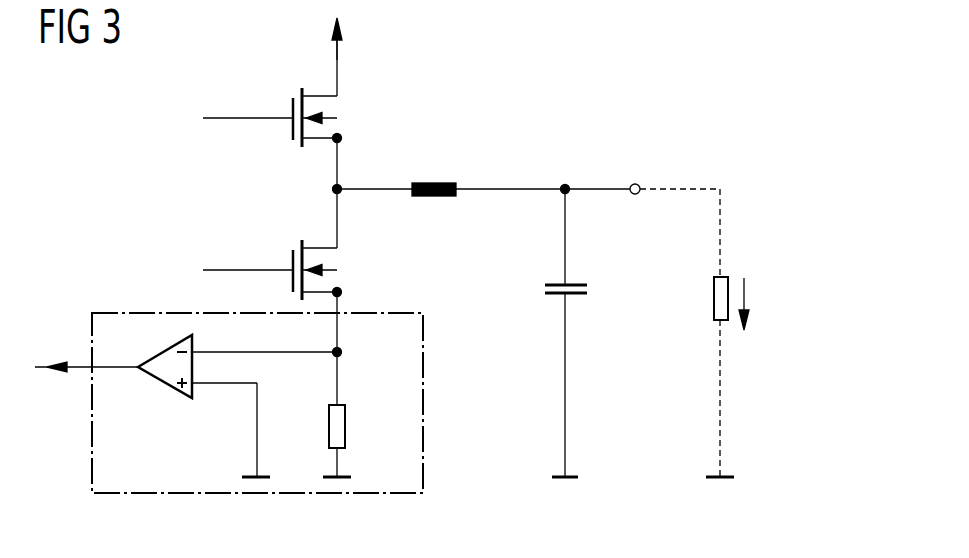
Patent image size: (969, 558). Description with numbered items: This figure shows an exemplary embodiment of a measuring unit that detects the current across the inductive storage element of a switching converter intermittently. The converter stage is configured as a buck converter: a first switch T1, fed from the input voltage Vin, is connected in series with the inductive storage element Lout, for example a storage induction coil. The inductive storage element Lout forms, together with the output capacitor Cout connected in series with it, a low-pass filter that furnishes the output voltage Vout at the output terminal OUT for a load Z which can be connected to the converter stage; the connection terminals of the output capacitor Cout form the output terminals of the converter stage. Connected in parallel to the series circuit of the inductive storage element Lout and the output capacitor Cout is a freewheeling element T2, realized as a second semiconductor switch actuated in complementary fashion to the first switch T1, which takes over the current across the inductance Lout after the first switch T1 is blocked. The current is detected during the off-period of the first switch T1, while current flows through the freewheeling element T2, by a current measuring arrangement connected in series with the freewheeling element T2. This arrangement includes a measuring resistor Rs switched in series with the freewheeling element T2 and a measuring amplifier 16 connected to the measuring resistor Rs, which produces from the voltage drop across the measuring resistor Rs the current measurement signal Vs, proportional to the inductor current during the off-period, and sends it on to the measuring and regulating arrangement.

The first switch T1 is at (292, 107).
The freewheeling element T2 is at (292, 258).
The input voltage Vin is at (354, 38).
The inductive storage element Lout is at (425, 183).
The output capacitor Cout is at (542, 290).
The output terminal OUT is at (637, 171).
The load impedance Z is at (713, 312).
The output voltage Vout is at (772, 304).
The measuring resistor Rs is at (345, 424).
The measuring amplifier 16 is at (165, 384).
The current measurement signal Vs is at (99, 313).